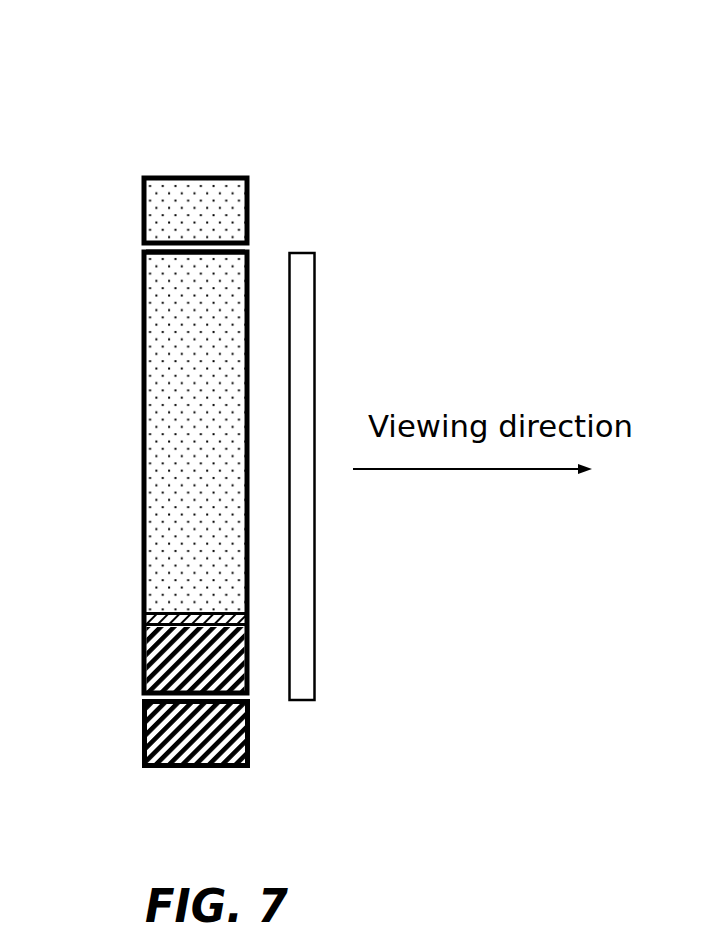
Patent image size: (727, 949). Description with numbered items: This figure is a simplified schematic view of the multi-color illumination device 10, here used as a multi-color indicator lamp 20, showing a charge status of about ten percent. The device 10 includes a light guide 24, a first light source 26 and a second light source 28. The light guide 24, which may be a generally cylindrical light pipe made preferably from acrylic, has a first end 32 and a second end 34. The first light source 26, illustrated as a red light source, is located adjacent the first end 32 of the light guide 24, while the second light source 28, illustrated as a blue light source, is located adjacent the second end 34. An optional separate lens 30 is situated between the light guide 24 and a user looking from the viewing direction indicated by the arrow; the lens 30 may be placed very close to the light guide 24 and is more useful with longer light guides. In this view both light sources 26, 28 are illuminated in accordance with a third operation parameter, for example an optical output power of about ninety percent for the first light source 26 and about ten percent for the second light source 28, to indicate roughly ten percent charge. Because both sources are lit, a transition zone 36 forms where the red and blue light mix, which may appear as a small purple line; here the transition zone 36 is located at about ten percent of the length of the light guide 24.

The multi-color illumination device 10 is at (397, 108).
The multi-color indicator lamp 20 is at (481, 158).
The light guide 24 is at (157, 430).
The first light source 26 is at (153, 202).
The second light source 28 is at (168, 750).
The lens 30 is at (308, 320).
The first end 32 is at (208, 252).
The second end 34 is at (168, 692).
The transition zone 36 is at (143, 620).